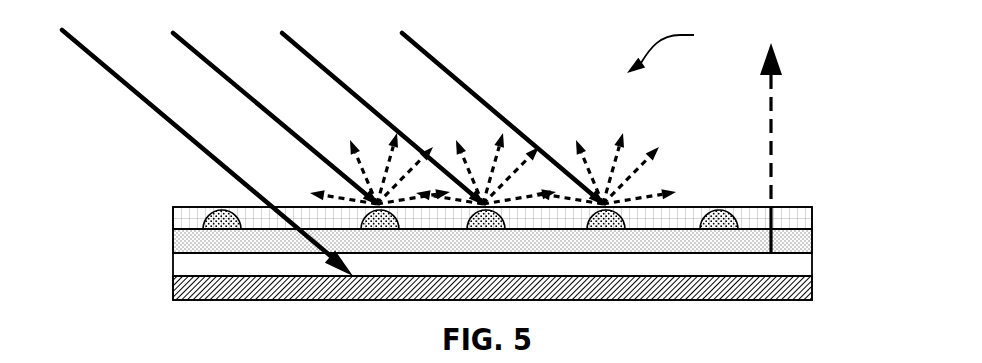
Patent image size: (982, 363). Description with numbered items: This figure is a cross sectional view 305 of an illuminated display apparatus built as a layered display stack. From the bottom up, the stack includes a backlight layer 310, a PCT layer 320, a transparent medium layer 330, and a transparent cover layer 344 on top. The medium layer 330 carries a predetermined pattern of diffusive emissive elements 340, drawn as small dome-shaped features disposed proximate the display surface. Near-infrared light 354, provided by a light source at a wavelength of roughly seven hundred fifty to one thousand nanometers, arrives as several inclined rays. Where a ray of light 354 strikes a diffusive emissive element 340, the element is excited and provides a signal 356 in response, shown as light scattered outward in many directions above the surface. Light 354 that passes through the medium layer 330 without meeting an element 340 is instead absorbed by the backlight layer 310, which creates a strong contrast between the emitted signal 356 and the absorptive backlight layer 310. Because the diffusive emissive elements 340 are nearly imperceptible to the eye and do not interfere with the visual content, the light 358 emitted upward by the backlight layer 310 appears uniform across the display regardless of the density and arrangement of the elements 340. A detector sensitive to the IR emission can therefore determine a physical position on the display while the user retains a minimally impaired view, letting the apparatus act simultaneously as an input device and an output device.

The cross sectional view 305 is at (680, 49).
The backlight layer 310 is at (173, 282).
The PCT layer 320 is at (173, 258).
The medium layer 330 is at (173, 235).
The diffusive emissive elements 340 is at (220, 207).
The transparent cover layer 344 is at (173, 213).
The light 354 is at (82, 45).
The signal 356 is at (642, 166).
The light emitted by the backlight layer 358 is at (772, 142).